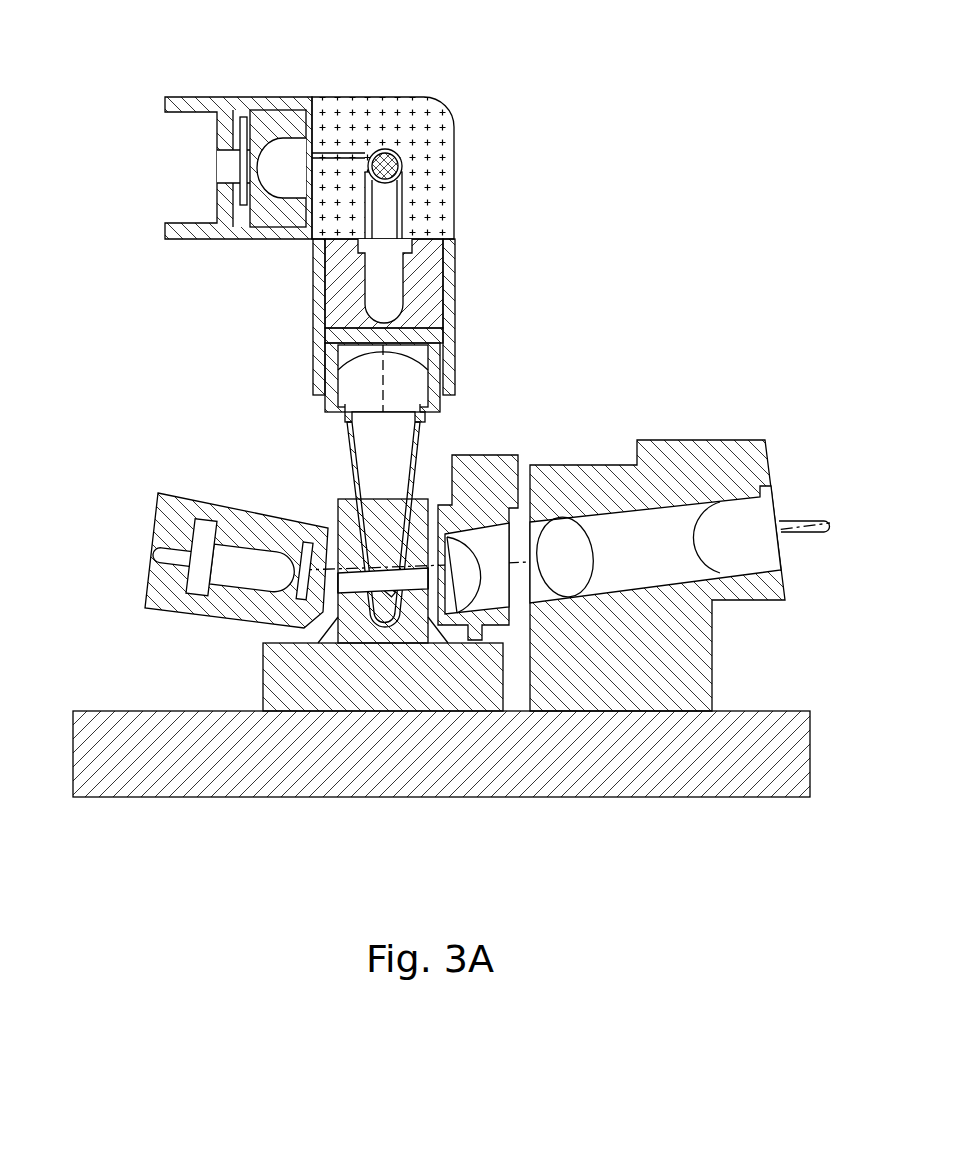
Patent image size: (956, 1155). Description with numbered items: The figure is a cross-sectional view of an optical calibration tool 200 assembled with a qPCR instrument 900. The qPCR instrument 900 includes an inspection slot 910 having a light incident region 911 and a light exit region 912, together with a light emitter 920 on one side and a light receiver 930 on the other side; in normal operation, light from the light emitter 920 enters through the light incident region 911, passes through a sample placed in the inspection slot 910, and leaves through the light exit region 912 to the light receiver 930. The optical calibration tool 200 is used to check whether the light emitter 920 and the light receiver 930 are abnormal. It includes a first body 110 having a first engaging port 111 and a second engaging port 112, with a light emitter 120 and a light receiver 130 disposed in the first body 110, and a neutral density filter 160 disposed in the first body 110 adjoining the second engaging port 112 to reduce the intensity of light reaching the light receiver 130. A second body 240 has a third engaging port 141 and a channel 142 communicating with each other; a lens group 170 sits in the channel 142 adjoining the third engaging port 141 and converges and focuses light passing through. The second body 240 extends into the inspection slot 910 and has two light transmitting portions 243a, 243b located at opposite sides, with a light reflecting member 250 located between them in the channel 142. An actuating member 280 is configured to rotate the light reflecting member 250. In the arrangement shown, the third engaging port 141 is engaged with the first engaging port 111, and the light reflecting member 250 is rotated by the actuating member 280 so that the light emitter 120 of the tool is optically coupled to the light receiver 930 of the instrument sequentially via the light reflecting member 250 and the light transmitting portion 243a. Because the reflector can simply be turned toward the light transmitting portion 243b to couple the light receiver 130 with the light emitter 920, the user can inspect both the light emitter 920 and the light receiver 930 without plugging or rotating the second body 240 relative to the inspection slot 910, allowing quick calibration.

The optical calibration tool 200 is at (499, 91).
The second engaging port 112 is at (200, 100).
The light receiver 130 is at (290, 148).
The neutral density filter 160 is at (243, 205).
The first body 110 is at (430, 188).
The first engaging port 111 is at (456, 352).
The light emitter 120 is at (388, 292).
The third engaging port 141 is at (445, 388).
The lens group 170 is at (358, 382).
The channel 142 is at (344, 426).
The second body 240 is at (421, 427).
The actuating member 280 is at (383, 572).
The light reflecting member 250 is at (373, 582).
The qPCR instrument 900 is at (117, 441).
The inspection slot 910 is at (385, 640).
The light incident region 911 is at (353, 598).
The light exit region 912 is at (417, 598).
The light transmitting portion 243a is at (425, 568).
The light transmitting portion 243b is at (350, 568).
The light emitter 920 is at (240, 565).
The light receiver 930 is at (747, 547).